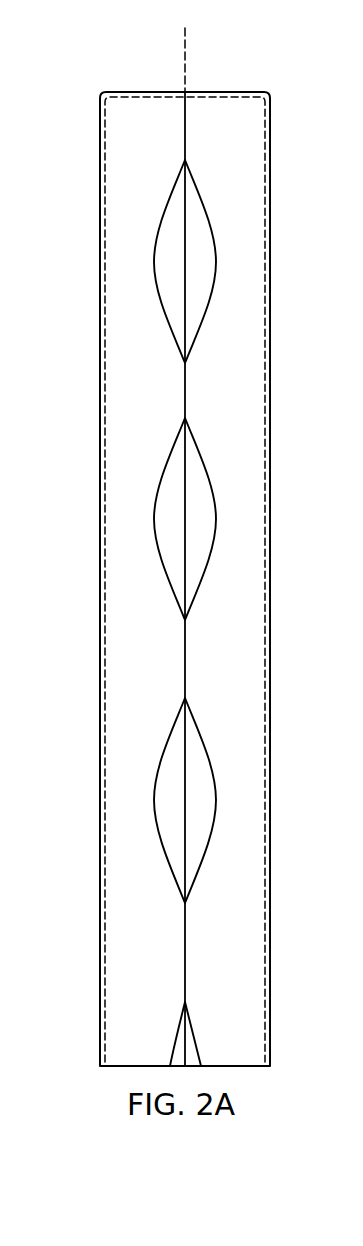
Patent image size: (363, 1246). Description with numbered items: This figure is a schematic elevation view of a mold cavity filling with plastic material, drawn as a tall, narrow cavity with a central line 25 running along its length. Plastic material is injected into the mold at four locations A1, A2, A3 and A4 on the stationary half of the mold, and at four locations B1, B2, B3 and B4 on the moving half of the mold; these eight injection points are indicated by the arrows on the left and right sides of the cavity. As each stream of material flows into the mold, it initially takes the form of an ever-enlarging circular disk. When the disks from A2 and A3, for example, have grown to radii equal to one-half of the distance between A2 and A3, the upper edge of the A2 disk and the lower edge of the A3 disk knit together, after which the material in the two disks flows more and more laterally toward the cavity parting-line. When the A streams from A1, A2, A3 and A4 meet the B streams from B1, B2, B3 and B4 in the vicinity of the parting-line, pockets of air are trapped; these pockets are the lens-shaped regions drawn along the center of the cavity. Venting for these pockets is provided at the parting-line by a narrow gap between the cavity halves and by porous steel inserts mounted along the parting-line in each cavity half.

The central axis of the tube 25 is at (185, 73).
The injection location A1 is at (88, 948).
The injection location A2 is at (88, 673).
The injection location A3 is at (88, 406).
The injection location A4 is at (88, 142).
The injection location B1 is at (282, 948).
The injection location B2 is at (282, 673).
The injection location B3 is at (282, 406).
The injection location B4 is at (282, 142).